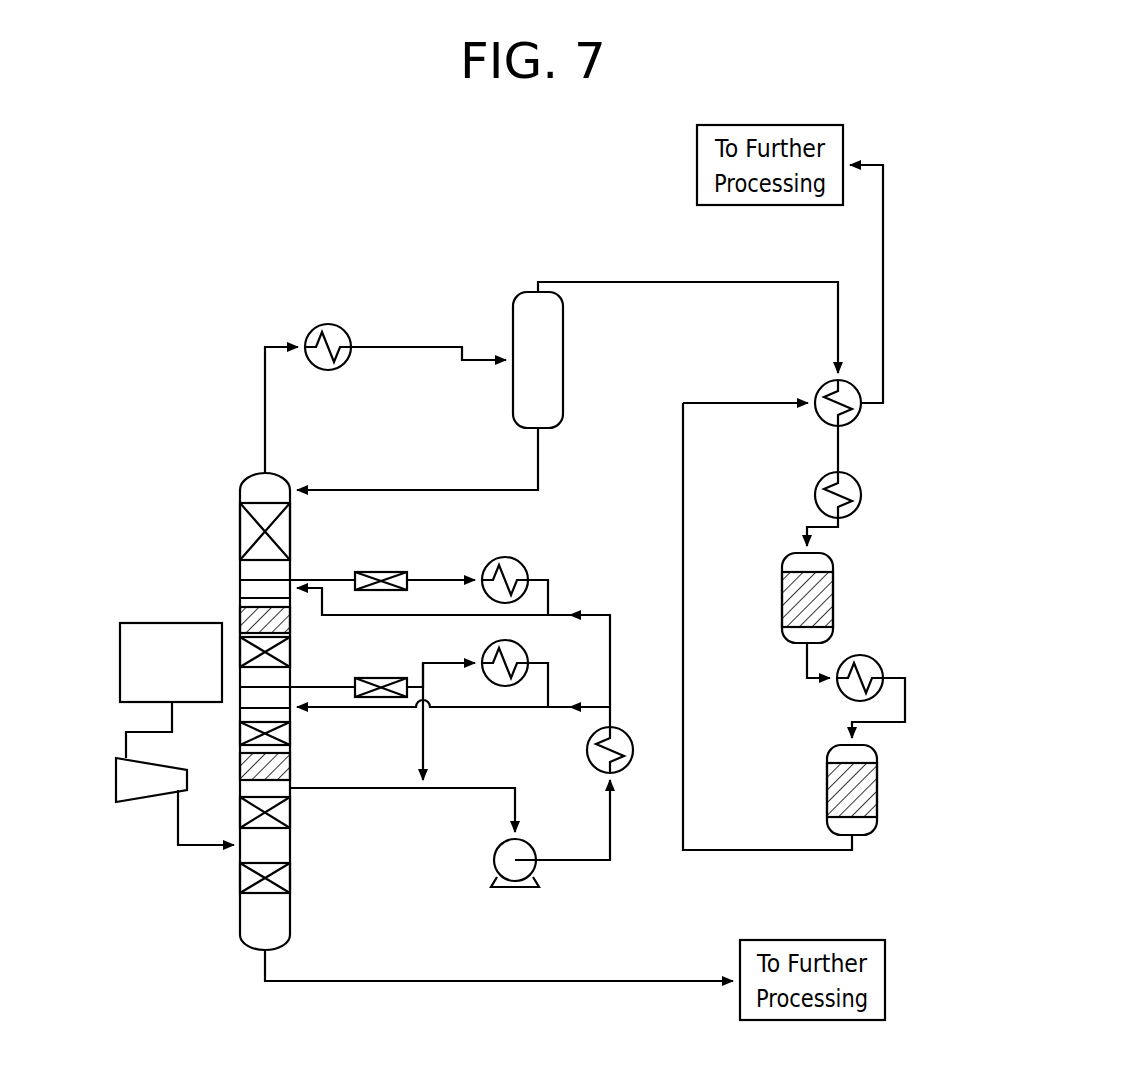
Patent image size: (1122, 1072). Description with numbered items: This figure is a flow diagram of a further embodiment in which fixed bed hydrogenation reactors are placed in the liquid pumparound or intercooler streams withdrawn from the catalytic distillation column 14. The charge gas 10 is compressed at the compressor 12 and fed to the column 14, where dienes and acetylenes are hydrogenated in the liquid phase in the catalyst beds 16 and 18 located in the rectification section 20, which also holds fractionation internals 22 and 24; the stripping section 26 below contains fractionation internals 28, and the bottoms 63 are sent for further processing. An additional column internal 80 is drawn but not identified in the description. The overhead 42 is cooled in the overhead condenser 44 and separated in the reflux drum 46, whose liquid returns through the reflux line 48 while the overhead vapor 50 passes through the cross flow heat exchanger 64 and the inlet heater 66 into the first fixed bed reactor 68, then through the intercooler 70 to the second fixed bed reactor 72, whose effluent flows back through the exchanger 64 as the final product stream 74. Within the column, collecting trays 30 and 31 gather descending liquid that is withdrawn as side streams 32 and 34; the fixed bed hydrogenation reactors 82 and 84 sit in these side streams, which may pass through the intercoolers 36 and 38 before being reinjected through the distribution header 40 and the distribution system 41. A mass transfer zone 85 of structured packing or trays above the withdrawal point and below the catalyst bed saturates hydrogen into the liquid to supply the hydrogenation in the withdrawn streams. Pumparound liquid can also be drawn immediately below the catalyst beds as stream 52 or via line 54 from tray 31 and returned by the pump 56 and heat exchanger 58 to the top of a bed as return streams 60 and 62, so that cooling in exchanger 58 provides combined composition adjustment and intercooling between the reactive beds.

The charge gas 10 is at (160, 622).
The compressor 12 is at (148, 788).
The catalytic distillation column 14 is at (232, 527).
The catalyst bed 16 is at (284, 769).
The catalyst bed 18 is at (300, 624).
The rectification section 20 is at (295, 518).
The fractionation internals 22 is at (285, 820).
The fractionation internals 24 is at (280, 537).
The stripping section 26 is at (290, 931).
The fractionation internals 28 is at (285, 880).
The collecting tray 30 is at (290, 579).
The collecting tray 31 is at (292, 685).
The side stream 32 is at (340, 579).
The side stream 34 is at (432, 663).
The intercooler 36 is at (522, 566).
The intercooler 38 is at (522, 656).
The distribution header 40 is at (240, 598).
The distribution system 41 is at (240, 718).
The overhead 42 is at (266, 402).
The overhead condenser 44 is at (322, 326).
The reflux drum 46 is at (522, 338).
The reflux line 48 is at (470, 491).
The overhead vapor 50 is at (725, 282).
The pumparound stream 52 is at (320, 789).
The pumparound line 54 is at (425, 740).
The pump 56 is at (526, 851).
The heat exchanger 58 is at (596, 766).
The return stream 60 is at (600, 710).
The return stream 62 is at (611, 620).
The bottoms 63 is at (586, 980).
The cross flow heat exchanger 64 is at (820, 420).
The inlet heater 66 is at (817, 481).
The first fixed bed reactor 68 is at (782, 592).
The intercooler 70 is at (872, 660).
The second fixed bed reactor 72 is at (827, 780).
The final product stream 74 is at (884, 358).
The fractionation trays 80 is at (284, 737).
The fixed bed hydrogenation reactor 82 is at (398, 572).
The fixed bed hydrogenation reactor 84 is at (385, 678).
The mass transfer zone 85 is at (285, 652).